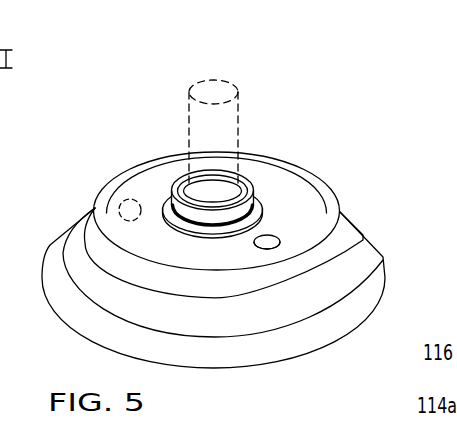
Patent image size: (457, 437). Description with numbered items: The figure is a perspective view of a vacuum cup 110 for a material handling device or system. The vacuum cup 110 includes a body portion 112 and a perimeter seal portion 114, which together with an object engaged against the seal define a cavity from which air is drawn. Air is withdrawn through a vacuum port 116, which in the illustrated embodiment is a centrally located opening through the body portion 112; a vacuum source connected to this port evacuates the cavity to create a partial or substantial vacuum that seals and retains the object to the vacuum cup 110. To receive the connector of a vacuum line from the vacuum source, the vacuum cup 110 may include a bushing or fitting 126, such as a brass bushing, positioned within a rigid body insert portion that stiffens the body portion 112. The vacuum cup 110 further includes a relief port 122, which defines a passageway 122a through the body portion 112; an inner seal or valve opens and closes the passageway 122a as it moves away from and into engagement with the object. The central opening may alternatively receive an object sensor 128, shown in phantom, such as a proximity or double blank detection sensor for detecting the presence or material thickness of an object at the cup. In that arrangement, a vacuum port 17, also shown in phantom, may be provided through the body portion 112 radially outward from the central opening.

The vacuum cup 110 is at (147, 140).
The body portion 112 is at (304, 206).
The perimeter seal portion 114 is at (370, 277).
The vacuum port 116 is at (214, 190).
The hidden feature 17 is at (108, 200).
The relief port 122 is at (250, 250).
The passageway 122a is at (264, 247).
The bushing or fitting 126 is at (237, 192).
The object sensor 128 is at (205, 82).